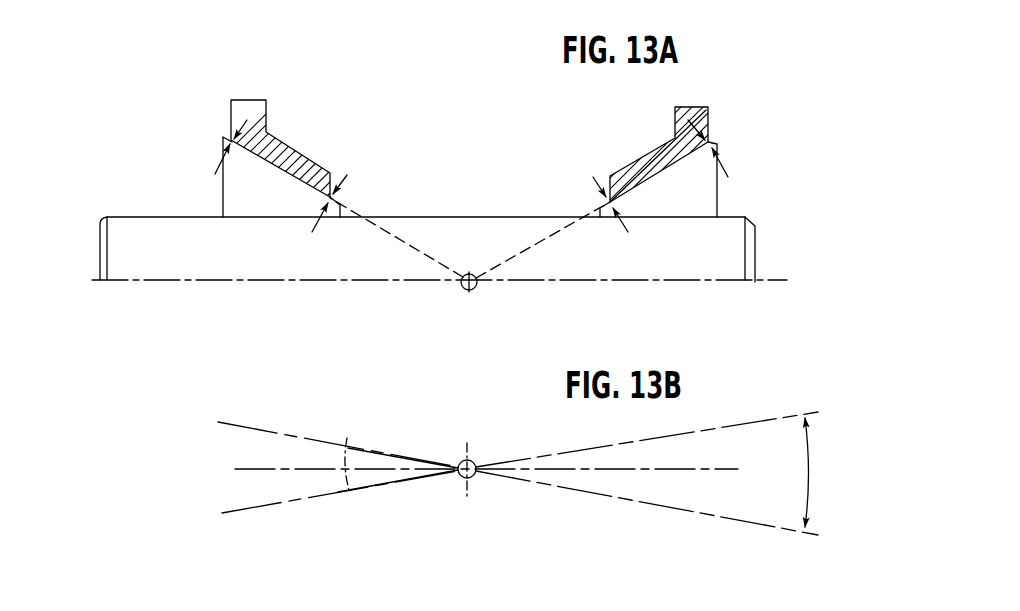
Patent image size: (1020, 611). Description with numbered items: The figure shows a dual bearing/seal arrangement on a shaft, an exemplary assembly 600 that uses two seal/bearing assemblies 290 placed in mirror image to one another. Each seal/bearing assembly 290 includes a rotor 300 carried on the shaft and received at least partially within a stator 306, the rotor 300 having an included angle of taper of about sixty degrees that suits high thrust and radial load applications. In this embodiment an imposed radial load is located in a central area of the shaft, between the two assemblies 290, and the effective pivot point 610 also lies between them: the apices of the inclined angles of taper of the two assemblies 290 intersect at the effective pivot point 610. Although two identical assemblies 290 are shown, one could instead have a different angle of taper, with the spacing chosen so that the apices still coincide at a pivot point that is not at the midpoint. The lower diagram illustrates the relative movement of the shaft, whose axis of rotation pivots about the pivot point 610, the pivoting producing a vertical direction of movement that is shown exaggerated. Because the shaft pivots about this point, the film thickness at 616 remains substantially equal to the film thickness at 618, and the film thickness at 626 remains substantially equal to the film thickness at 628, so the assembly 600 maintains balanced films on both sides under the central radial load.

In FIG. 13A, the assembly 600 is at (386, 92).
In FIG. 13A, the stator 306 is at (301, 158).
In FIG. 13A, the seal/bearing assembly 290 is at (206, 137).
In FIG. 13A, the rotor 300 is at (253, 190).
In FIG. 13A, the film thickness location 628 is at (212, 147).
In FIG. 13A, the film thickness location 626 is at (347, 202).
In FIG. 13A, the film thickness location 616 is at (596, 192).
In FIG. 13A, the film thickness location 618 is at (724, 148).
In FIG. 13A, the effective pivot point 610 is at (471, 290).
In FIG. 13B, the effective pivot point 610 is at (476, 461).